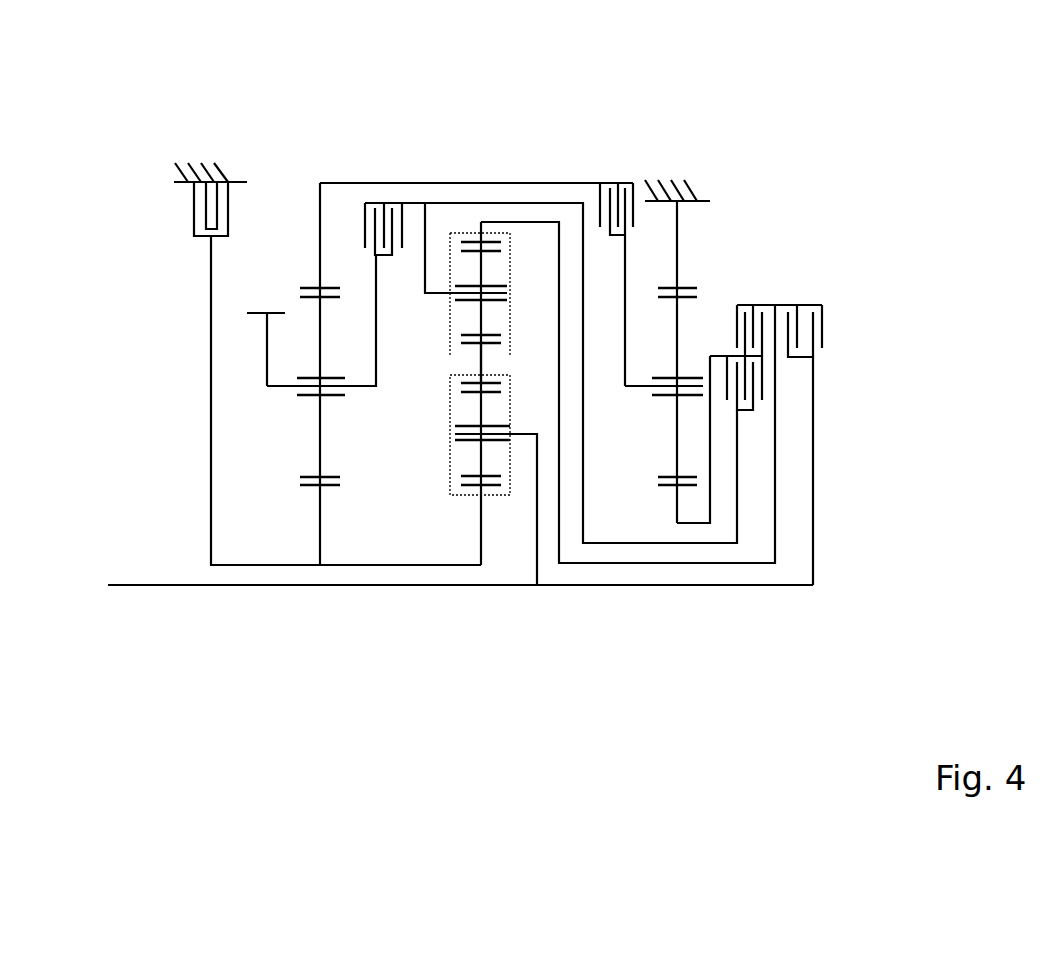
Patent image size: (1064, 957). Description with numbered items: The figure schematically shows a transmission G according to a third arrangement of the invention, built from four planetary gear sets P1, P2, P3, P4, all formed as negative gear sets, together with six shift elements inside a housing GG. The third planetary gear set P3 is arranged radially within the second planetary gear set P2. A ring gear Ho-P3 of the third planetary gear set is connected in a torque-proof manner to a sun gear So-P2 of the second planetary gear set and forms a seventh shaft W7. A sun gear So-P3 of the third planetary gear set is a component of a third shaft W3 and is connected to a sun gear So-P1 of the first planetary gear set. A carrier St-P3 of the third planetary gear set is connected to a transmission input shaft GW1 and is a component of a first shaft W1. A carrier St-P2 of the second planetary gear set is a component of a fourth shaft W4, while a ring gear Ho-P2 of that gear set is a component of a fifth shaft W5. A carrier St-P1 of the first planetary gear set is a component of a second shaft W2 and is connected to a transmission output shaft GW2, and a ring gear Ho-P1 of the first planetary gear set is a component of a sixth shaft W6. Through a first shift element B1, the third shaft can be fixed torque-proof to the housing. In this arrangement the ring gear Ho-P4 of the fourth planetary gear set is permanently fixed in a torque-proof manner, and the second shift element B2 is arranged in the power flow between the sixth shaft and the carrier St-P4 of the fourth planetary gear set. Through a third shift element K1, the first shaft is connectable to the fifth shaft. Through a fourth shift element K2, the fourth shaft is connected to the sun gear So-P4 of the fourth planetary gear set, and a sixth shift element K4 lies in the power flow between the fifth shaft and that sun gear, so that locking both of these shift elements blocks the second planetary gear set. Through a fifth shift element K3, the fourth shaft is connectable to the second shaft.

The first shift element B1 is at (190, 210).
The second shift element B2 is at (640, 215).
The third shift element K1 is at (827, 325).
The fourth shift element K2 is at (772, 383).
The fifth shift element K3 is at (351, 223).
The sixth shift element K4 is at (756, 298).
The transmission G is at (666, 143).
The housing GG is at (677, 178).
The transmission input shaft GW1 is at (146, 588).
The transmission output shaft GW2 is at (260, 308).
The first shaft W1 is at (815, 527).
The second shaft W2 is at (265, 385).
The third shaft W3 is at (210, 507).
The fourth shaft W4 is at (410, 203).
The fifth shaft W5 is at (778, 465).
The sixth shaft W6 is at (600, 182).
The seventh shaft W7 is at (468, 372).
The first planetary gear set P1 is at (320, 162).
The second planetary gear set P2 is at (457, 183).
The third planetary gear set P3 is at (458, 505).
The fourth planetary gear set P4 is at (678, 596).
The ring gear of the first planetary gear set Ho-P1 is at (308, 285).
The carrier of the first planetary gear set St-P1 is at (280, 392).
The sun gear of the first planetary gear set So-P1 is at (310, 490).
The ring gear of the second planetary gear set Ho-P2 is at (490, 240).
The carrier of the second planetary gear set St-P2 is at (432, 290).
The sun gear of the second planetary gear set So-P2 is at (455, 350).
The ring gear of the third planetary gear set Ho-P3 is at (487, 382).
The carrier of the third planetary gear set St-P3 is at (512, 442).
The sun gear of the third planetary gear set So-P3 is at (497, 495).
The ring gear of the fourth planetary gear set Ho-P4 is at (687, 287).
The carrier of the fourth planetary gear set St-P4 is at (642, 392).
The sun gear of the fourth planetary gear set So-P4 is at (683, 492).